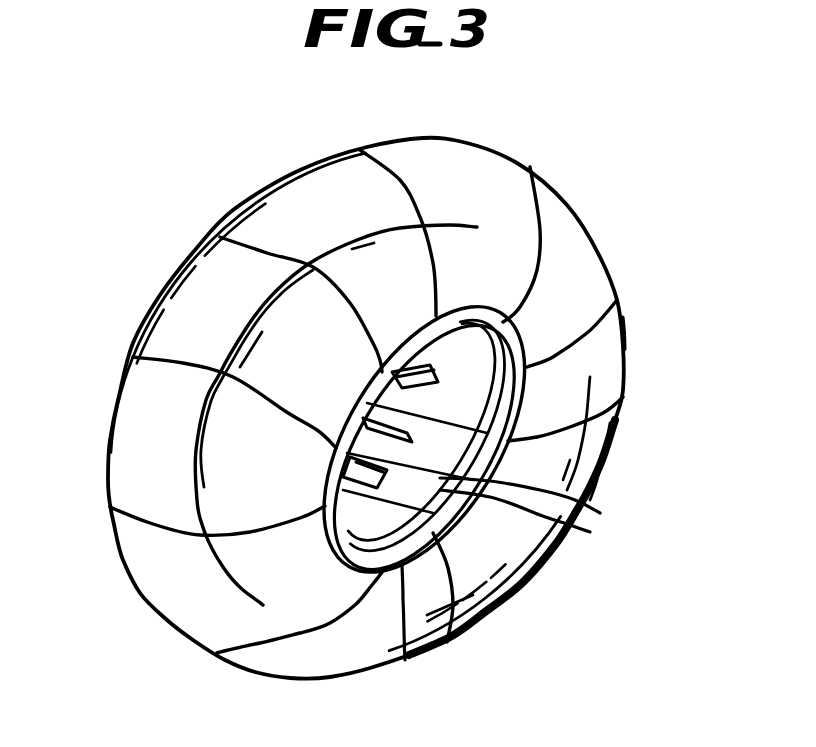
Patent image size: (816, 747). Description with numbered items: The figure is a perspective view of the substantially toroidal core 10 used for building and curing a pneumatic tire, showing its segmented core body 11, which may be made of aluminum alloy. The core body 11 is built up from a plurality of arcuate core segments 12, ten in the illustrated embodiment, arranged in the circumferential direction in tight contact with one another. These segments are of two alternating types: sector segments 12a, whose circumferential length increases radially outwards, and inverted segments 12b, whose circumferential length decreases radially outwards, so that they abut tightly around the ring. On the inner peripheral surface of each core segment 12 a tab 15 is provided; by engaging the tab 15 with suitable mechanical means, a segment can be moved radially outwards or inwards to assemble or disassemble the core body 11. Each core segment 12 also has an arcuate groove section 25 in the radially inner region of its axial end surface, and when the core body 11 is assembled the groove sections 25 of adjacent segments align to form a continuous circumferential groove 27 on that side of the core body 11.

The toroidal core 10 is at (148, 261).
The core body 11 is at (227, 213).
The core segment 12 is at (582, 283).
The sector segment 12a is at (567, 205).
The inverted segment 12b is at (620, 345).
The tab 15 is at (410, 372).
The groove section 25 is at (578, 508).
The circumferential groove 27 is at (405, 660).